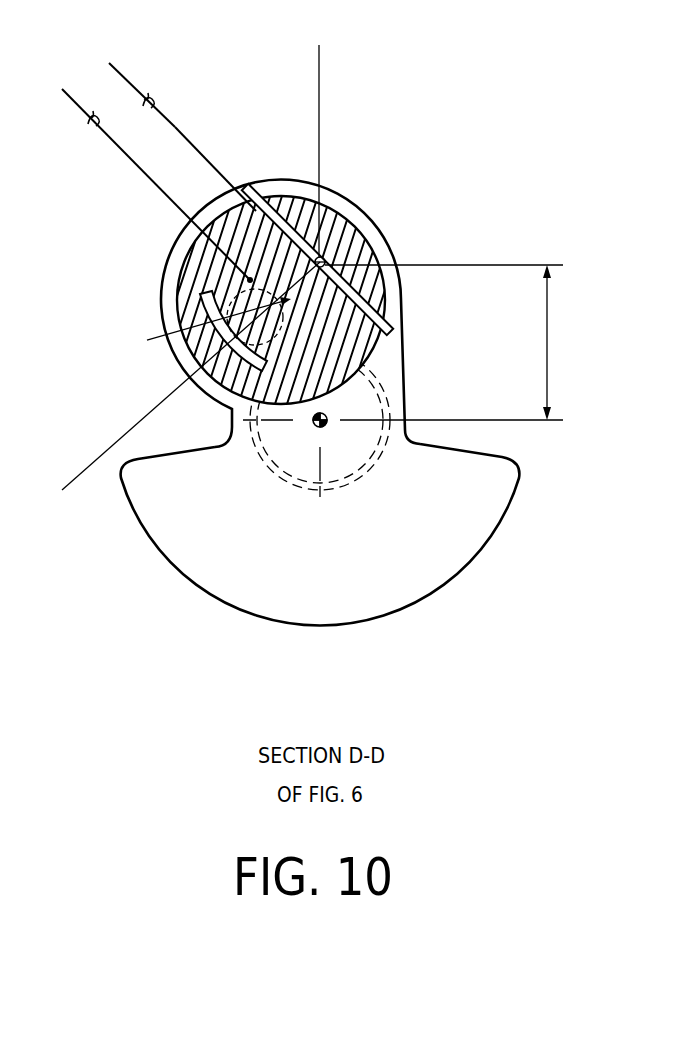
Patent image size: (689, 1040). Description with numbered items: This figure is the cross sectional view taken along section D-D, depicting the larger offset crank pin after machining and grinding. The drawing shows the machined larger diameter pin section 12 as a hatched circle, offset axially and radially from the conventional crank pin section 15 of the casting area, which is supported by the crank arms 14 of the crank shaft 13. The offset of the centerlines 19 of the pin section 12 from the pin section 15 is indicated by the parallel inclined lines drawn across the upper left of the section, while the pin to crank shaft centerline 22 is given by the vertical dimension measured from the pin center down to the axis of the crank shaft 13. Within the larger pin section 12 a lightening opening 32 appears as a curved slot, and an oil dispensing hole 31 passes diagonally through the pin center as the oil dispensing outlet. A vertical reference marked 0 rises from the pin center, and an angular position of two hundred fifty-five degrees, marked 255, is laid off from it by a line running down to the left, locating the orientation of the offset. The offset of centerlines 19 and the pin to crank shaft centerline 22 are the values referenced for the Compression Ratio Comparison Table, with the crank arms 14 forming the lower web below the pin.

The zero degree reference line 0 is at (319, 136).
The larger pin section 12 is at (132, 170).
The crank shaft 13 is at (273, 470).
The crank arms 14 is at (170, 574).
The conventional crank pin section 15 is at (143, 87).
The offset of centerlines 19 is at (183, 116).
The pin to crank shaft centerline 22 is at (444, 342).
The oil dispensing hole 31 is at (338, 248).
The lightening opening 32 is at (403, 266).
The angle of 255 degrees 255 is at (73, 497).